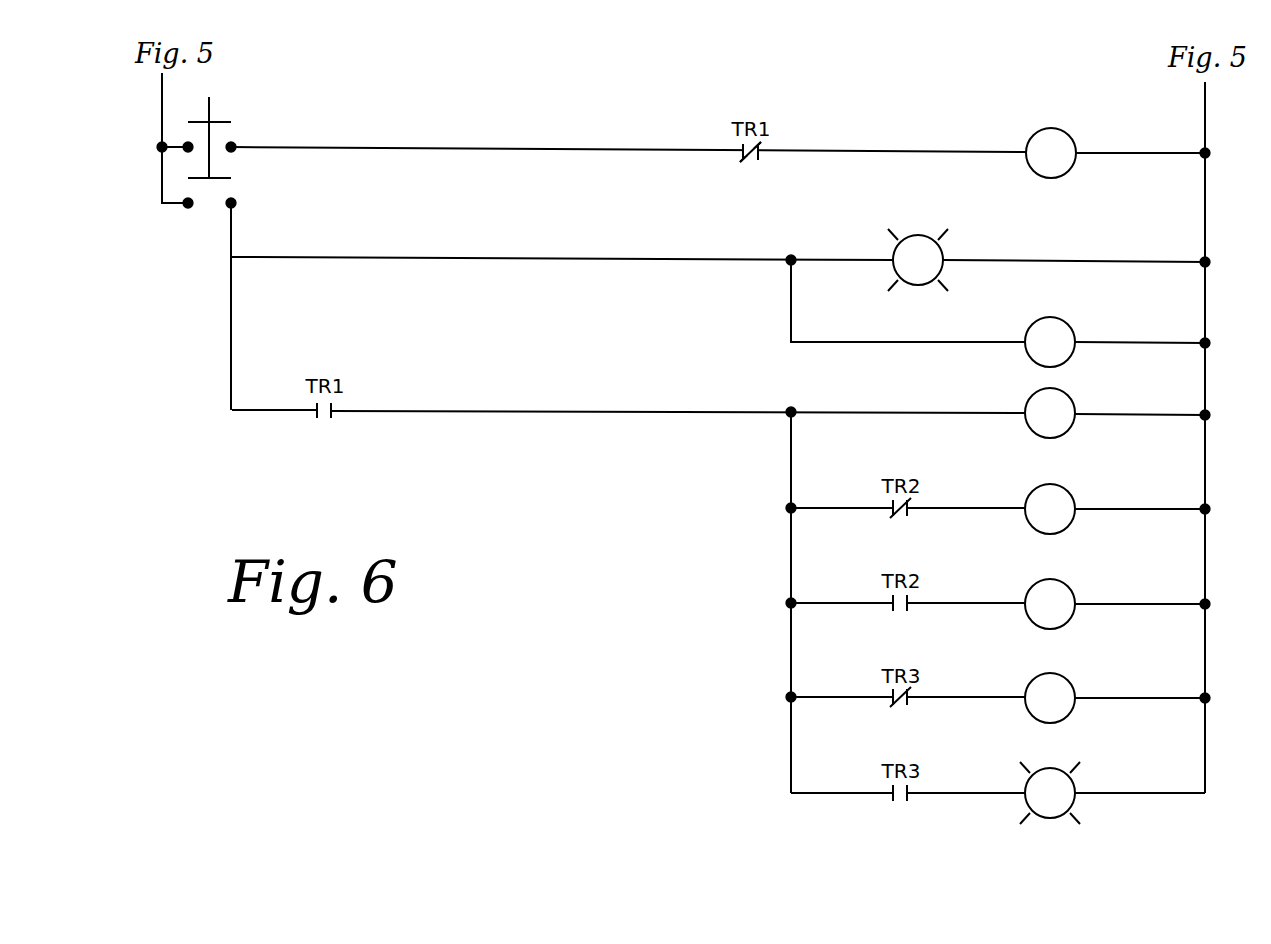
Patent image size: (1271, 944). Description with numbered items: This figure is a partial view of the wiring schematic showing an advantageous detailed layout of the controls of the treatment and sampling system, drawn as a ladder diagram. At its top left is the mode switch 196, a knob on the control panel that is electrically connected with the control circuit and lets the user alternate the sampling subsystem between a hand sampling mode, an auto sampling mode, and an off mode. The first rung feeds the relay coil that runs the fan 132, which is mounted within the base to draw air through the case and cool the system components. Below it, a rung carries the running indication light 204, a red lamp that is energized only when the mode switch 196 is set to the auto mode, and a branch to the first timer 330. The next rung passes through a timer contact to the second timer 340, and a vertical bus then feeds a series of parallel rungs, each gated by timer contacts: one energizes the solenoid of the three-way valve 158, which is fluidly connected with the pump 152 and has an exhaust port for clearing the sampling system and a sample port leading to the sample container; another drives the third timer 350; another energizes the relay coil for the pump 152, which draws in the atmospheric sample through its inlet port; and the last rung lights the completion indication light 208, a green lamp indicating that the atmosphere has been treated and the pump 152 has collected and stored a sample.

The mode switch 196 is at (237, 122).
The fan 132 is at (1067, 172).
The running indication light 204 is at (938, 249).
The first timer 330 is at (1066, 360).
The second timer 340 is at (1066, 431).
The three-way valve 158 is at (1066, 527).
The third timer 350 is at (1066, 622).
The pump 152 is at (1066, 716).
The completion indication light 208 is at (1066, 811).